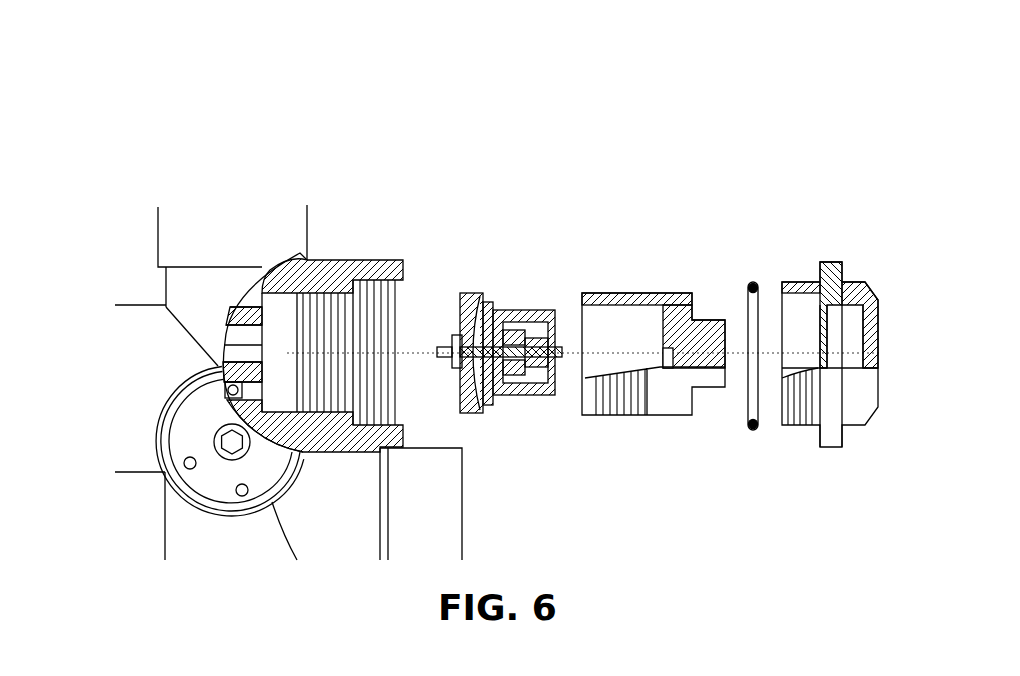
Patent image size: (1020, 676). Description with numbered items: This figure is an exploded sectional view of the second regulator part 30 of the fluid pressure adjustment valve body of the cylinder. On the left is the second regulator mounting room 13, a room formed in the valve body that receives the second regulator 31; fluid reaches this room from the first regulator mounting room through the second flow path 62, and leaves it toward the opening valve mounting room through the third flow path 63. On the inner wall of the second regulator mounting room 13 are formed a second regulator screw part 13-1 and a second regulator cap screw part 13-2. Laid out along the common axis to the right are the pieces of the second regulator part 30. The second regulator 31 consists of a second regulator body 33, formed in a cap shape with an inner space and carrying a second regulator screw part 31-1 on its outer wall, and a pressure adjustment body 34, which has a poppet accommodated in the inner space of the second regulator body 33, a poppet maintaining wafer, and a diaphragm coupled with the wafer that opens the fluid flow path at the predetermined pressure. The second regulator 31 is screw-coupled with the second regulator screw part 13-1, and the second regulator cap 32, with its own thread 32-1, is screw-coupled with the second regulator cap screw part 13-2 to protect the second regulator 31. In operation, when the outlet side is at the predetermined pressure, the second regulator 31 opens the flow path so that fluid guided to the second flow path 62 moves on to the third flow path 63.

The second regulator mounting room 13 is at (377, 253).
The second regulator screw part 13-1 is at (310, 305).
The second regulator cap screw part 13-2 is at (370, 300).
The second regulator part 30 is at (691, 320).
The second regulator 31 is at (581, 318).
The second regulator screw part 31-1 is at (617, 423).
The second regulator cap 32 is at (838, 402).
The cap nut thread 32-1 is at (805, 427).
The second regulator body 33 is at (634, 352).
The pressure adjustment body 34 is at (512, 306).
The second flow path 62 is at (238, 353).
The third flow path 63 is at (235, 310).